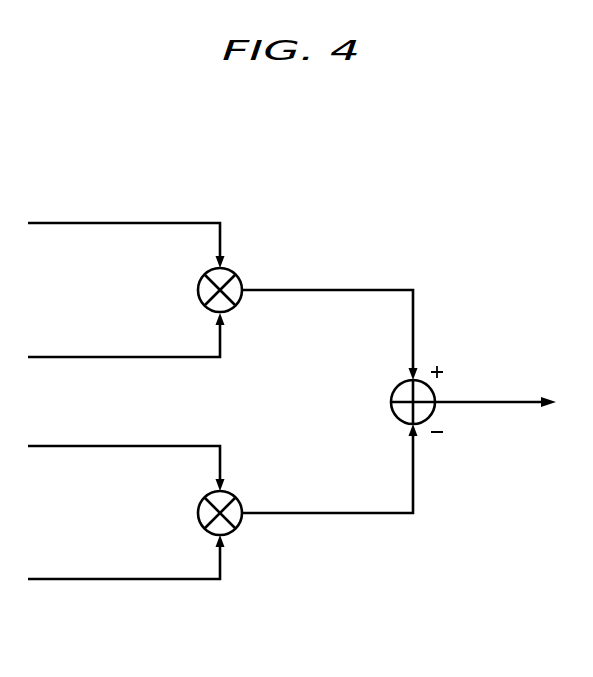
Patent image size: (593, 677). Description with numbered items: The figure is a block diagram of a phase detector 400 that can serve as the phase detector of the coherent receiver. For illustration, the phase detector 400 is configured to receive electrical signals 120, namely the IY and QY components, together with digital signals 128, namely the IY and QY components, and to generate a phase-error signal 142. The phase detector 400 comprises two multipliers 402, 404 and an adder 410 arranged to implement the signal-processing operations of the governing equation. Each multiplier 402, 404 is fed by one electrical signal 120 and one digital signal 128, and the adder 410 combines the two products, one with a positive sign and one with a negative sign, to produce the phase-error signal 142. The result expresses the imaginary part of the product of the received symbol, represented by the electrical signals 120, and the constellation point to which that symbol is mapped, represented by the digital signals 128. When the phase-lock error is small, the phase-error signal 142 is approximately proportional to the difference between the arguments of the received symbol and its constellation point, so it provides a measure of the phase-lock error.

The phase detector 400 is at (310, 118).
The digital signals 128 is at (99, 478).
The electrical signals 120 is at (99, 608).
The multiplier 402 is at (238, 275).
The multiplier 404 is at (238, 497).
The adder 410 is at (397, 385).
The phase-error signal 142 is at (497, 400).